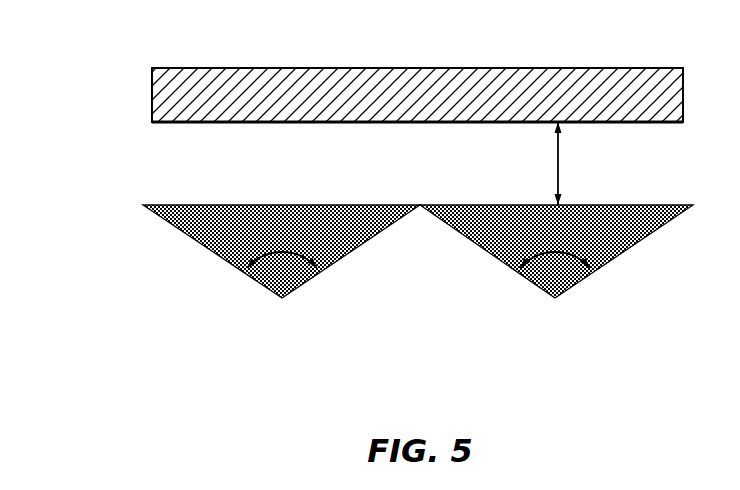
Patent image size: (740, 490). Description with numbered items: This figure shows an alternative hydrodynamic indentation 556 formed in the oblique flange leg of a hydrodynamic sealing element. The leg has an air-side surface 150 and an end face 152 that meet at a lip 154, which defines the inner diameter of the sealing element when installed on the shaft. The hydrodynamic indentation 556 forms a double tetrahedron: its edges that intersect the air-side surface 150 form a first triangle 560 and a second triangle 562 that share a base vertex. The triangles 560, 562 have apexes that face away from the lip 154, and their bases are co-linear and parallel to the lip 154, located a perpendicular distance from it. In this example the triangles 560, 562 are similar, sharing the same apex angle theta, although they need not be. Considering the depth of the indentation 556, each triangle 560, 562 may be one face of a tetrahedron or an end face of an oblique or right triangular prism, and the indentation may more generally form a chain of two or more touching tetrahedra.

The air-side surface 150 is at (418, 251).
The end face 152 is at (259, 93).
The lip 154 is at (343, 124).
The hydrodynamic indentation 556 is at (357, 160).
The first triangle 560 is at (266, 238).
The second triangle 562 is at (542, 238).